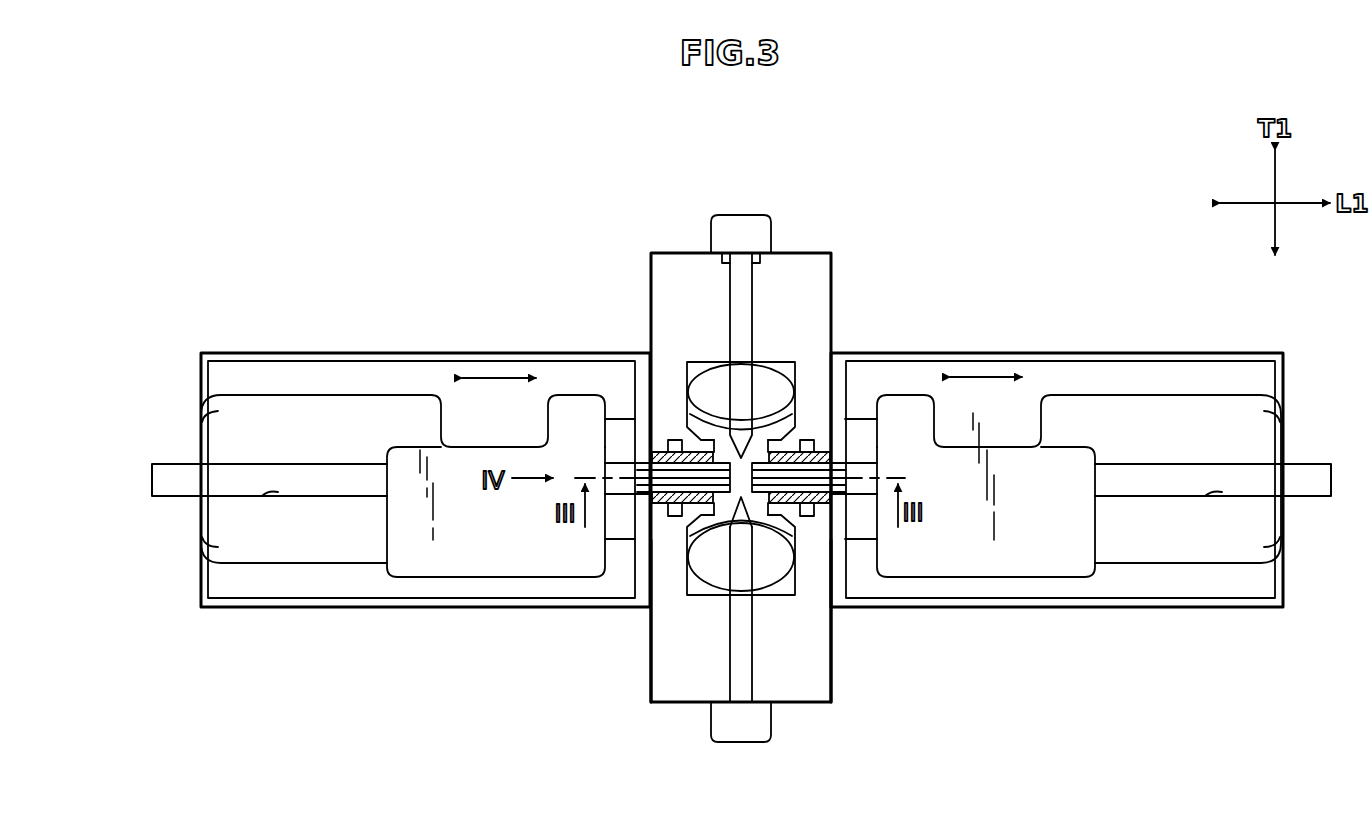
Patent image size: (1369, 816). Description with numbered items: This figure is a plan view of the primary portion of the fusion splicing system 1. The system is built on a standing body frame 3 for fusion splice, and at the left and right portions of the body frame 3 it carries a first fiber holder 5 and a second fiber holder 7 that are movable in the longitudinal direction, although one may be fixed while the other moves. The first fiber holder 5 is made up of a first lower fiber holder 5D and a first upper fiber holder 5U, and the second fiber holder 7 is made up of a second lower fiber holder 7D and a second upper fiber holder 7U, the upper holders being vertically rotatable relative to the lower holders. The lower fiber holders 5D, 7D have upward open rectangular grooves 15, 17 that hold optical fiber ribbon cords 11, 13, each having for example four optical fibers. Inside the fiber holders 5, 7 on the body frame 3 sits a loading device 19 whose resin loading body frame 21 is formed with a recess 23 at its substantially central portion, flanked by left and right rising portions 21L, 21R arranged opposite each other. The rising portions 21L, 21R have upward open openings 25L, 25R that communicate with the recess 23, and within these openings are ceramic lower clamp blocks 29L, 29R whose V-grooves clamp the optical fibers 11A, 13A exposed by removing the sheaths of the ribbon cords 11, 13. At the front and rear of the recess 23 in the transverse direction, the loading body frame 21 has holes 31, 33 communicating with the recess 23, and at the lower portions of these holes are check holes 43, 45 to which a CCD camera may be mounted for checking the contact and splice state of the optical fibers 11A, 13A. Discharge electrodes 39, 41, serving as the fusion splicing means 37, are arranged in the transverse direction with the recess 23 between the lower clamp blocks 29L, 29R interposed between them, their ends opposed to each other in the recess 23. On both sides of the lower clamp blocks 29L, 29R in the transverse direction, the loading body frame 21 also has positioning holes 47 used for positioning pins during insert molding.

The fusion splicing system 1 is at (939, 220).
The body frame 3 is at (1047, 608).
The first fiber holder 5 is at (360, 575).
The first lower fiber holder 5D is at (350, 410).
The first upper fiber holder 5U is at (462, 423).
The second fiber holder 7 is at (1147, 575).
The second lower fiber holder 7D is at (1127, 412).
The second upper fiber holder 7U is at (1067, 565).
The optical fiber ribbon cord 11 is at (170, 478).
The optical fibers 11A is at (637, 496).
The optical fiber ribbon cord 13 is at (1313, 477).
The optical fibers 13A is at (846, 496).
The rectangular groove 15 is at (265, 494).
The rectangular groove 17 is at (1210, 494).
The loading device 19 is at (848, 323).
The loading body frame 21 is at (667, 296).
The left rising portion 21L is at (660, 560).
The right rising portion 21R is at (802, 560).
The recess 23 is at (733, 512).
The opening 25L is at (692, 453).
The opening 25R is at (790, 455).
The lower clamp block 29L is at (646, 499).
The lower clamp block 29R is at (843, 498).
The hole 31 is at (785, 591).
The hole 33 is at (800, 372).
The fusion splicing means 37 is at (700, 742).
The discharge electrode 39 is at (728, 297).
The discharge electrode 41 is at (745, 678).
The check hole 43 is at (786, 400).
The check hole 45 is at (722, 583).
The positioning hole 47 is at (670, 444).